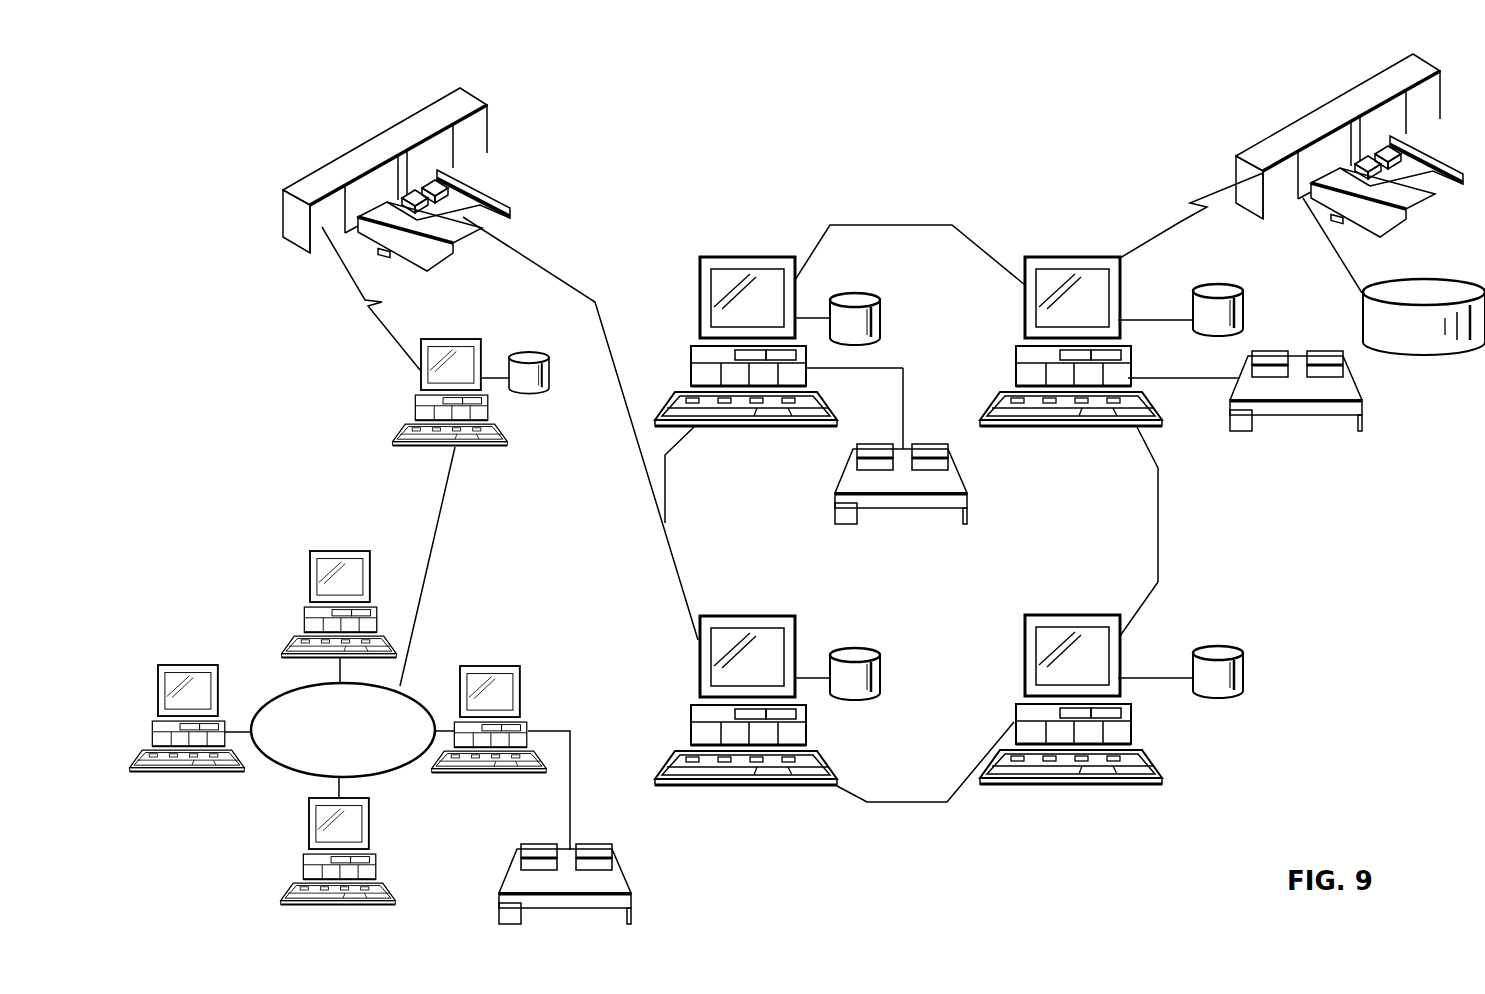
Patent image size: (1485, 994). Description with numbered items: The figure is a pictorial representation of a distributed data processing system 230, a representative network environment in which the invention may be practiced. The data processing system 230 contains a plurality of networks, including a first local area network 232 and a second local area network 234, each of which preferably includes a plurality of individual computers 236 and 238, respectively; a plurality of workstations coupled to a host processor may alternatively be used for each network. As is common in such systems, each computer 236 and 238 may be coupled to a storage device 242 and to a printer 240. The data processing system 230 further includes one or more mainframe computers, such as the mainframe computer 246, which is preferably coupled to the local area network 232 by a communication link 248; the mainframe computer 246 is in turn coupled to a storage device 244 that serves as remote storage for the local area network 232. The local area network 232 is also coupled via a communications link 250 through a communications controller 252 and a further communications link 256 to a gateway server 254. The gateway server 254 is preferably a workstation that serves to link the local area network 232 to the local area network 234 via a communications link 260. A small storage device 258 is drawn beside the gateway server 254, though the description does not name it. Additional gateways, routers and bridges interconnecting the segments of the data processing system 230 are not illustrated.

The distributed data processing system 230 is at (905, 210).
The local area network 232 is at (905, 802).
The local area network 234 is at (290, 772).
The individual computer 236 is at (718, 254).
The individual computer 238 is at (309, 580).
The printer 240 is at (951, 480).
The storage device 242 is at (880, 318).
The storage device 244 is at (1420, 337).
The mainframe computer 246 is at (1258, 155).
The communication link 248 is at (1212, 187).
The communications link 250 is at (560, 273).
The communications controller 252 is at (362, 157).
The gateway server 254 is at (464, 338).
The communications link 256 is at (388, 333).
The storage device 258 is at (520, 352).
The communications link 260 is at (430, 525).